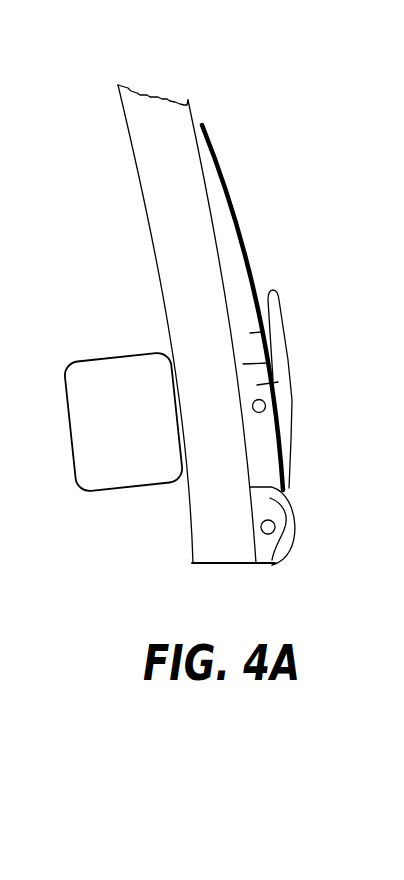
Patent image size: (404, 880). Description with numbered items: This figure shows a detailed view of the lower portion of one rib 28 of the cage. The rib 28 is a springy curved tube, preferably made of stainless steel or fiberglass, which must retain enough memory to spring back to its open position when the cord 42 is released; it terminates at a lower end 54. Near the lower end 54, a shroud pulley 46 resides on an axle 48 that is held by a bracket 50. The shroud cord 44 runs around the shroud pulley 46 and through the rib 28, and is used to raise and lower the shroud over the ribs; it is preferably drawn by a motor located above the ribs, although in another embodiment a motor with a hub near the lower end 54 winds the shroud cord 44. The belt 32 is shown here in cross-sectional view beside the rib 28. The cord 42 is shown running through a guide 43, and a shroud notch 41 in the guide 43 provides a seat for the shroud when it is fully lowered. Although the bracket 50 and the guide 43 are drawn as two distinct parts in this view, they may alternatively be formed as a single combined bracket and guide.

The rib 28 is at (168, 210).
The belt 32 is at (128, 385).
The shroud cord 44 is at (250, 258).
The shroud notch 41 is at (282, 296).
The guide 43 is at (286, 365).
The cord 42 is at (265, 408).
The bracket 50 is at (258, 498).
The axle 48 is at (272, 529).
The shroud pulley 46 is at (283, 556).
The lower end 54 is at (218, 557).